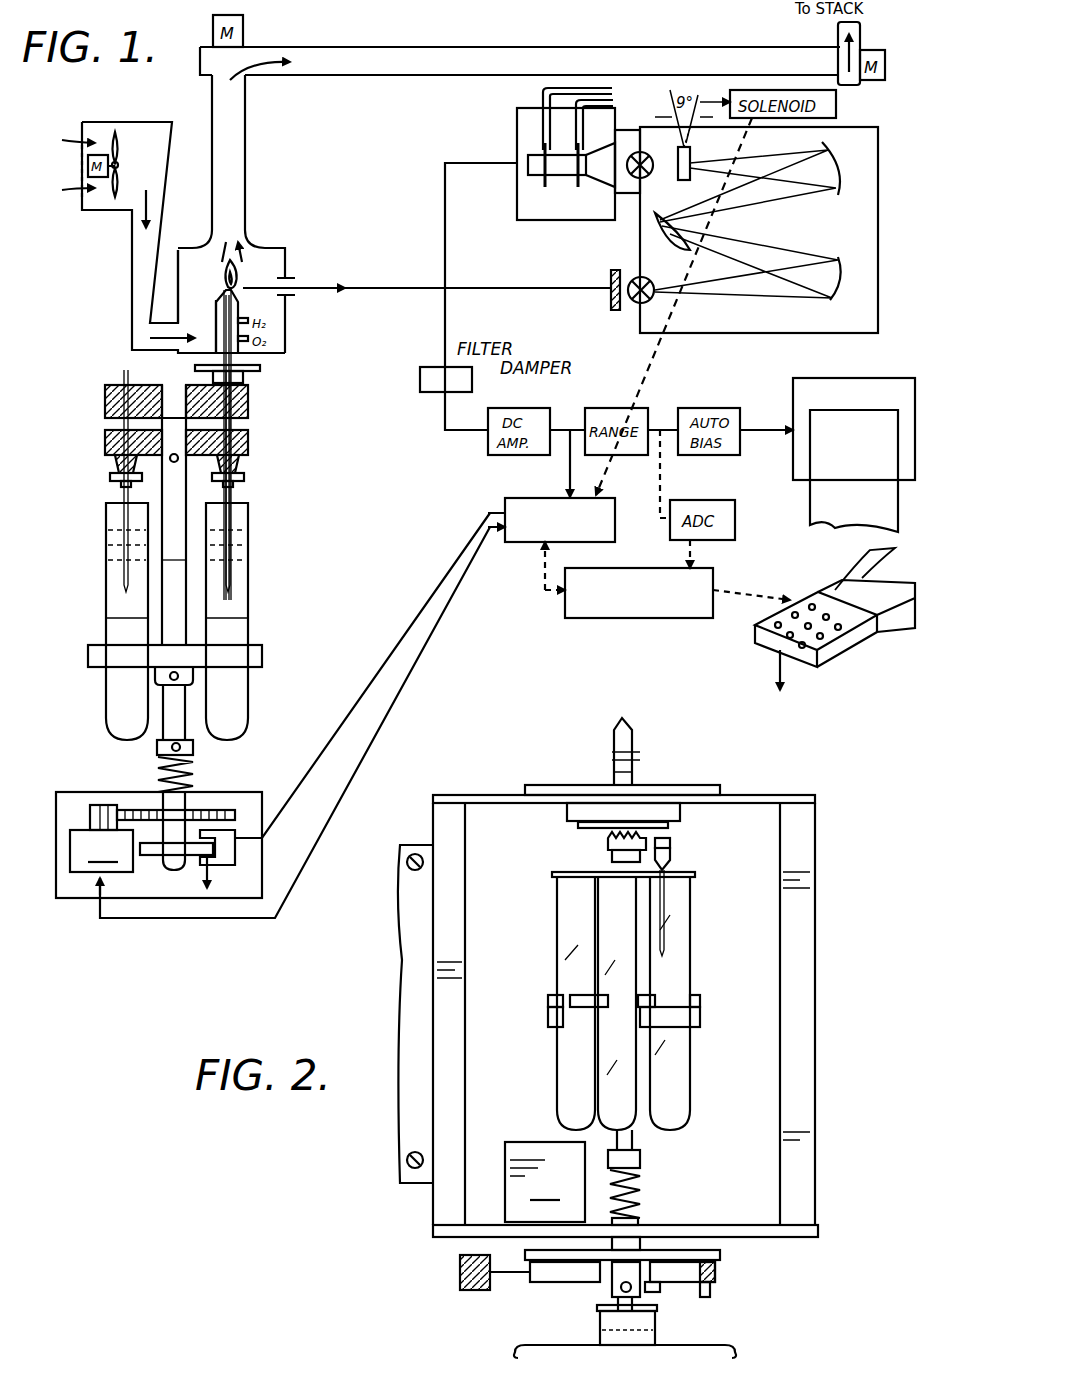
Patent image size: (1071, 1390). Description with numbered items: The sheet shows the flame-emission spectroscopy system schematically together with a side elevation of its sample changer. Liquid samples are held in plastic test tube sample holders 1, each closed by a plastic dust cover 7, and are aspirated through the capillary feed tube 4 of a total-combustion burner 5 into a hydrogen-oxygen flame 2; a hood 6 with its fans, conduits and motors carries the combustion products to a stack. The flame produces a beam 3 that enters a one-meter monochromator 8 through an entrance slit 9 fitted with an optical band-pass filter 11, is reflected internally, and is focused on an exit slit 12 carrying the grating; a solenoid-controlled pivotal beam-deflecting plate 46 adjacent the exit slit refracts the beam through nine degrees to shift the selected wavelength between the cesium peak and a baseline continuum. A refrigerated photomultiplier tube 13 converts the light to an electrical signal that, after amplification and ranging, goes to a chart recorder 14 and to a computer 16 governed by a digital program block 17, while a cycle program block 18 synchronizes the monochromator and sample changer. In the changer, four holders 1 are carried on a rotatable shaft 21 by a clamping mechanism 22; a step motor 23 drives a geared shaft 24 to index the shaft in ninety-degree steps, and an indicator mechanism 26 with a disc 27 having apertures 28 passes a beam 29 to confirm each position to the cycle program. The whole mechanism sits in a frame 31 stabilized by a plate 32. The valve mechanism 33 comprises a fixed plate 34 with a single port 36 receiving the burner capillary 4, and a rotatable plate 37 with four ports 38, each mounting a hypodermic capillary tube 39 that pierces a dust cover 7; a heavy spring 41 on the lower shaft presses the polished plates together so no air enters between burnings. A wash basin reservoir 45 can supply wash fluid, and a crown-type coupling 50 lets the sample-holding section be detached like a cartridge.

In FIG. 1, the sample holder 1 is at (108, 603).
In FIG. 2, the sample holder 1 is at (693, 1108).
In FIG. 1, the flame 2 is at (245, 302).
In FIG. 1, the beam 3 is at (410, 286).
In FIG. 1, the capillary feed tube 4 is at (262, 368).
In FIG. 1, the burner 5 is at (285, 262).
In FIG. 2, the burner 5 is at (645, 765).
In FIG. 1, the hood 6 is at (198, 262).
In FIG. 1, the plastic dust cover 7 is at (115, 518).
In FIG. 1, the monochromator 8 is at (858, 244).
In FIG. 1, the entrance slit 9 is at (662, 282).
In FIG. 1, the optical band-pass filter 11 is at (614, 272).
In FIG. 1, the exit slit 12 is at (640, 140).
In FIG. 1, the photomultiplier tube 13 is at (517, 118).
In FIG. 1, the chart recorder 14 is at (915, 378).
In FIG. 1, the computer 16 is at (835, 619).
In FIG. 1, the digital program block 17 is at (612, 618).
In FIG. 1, the cycle program block 18 is at (515, 545).
In FIG. 1, the rotatable shaft 21 is at (185, 582).
In FIG. 2, the rotatable shaft 21 is at (640, 1150).
In FIG. 1, the clamping mechanism 22 is at (262, 660).
In FIG. 2, the clamping mechanism 22 is at (692, 1070).
In FIG. 1, the step motor 23 is at (101, 851).
In FIG. 2, the step motor 23 is at (545, 1182).
In FIG. 1, the geared shaft 24 is at (95, 808).
In FIG. 2, the geared shaft 24 is at (530, 1272).
In FIG. 1, the indicator mechanism 26 is at (243, 850).
In FIG. 2, the indicator mechanism 26 is at (435, 1285).
In FIG. 1, the disc 27 is at (178, 858).
In FIG. 1, the apertures 28 is at (238, 812).
In FIG. 1, the beam 29 is at (218, 878).
In FIG. 2, the frame 31 is at (800, 962).
In FIG. 2, the plate 32 is at (426, 1082).
In FIG. 1, the valve mechanism 33 is at (75, 425).
In FIG. 2, the valve mechanism 33 is at (680, 842).
In FIG. 1, the fixed plate 34 is at (250, 400).
In FIG. 1, the port 36 is at (208, 388).
In FIG. 1, the rotatable plate 37 is at (105, 445).
In FIG. 1, the ports 38 is at (112, 478).
In FIG. 1, the capillary tube 39 is at (122, 552).
In FIG. 2, the capillary tube 39 is at (668, 950).
In FIG. 1, the heavy spring 41 is at (193, 772).
In FIG. 2, the heavy spring 41 is at (640, 1200).
In FIG. 2, the wash basin reservoir 45 is at (600, 1318).
In FIG. 1, the beam-deflecting plate 46 is at (692, 155).
In FIG. 2, the crown-type coupling 50 is at (608, 848).